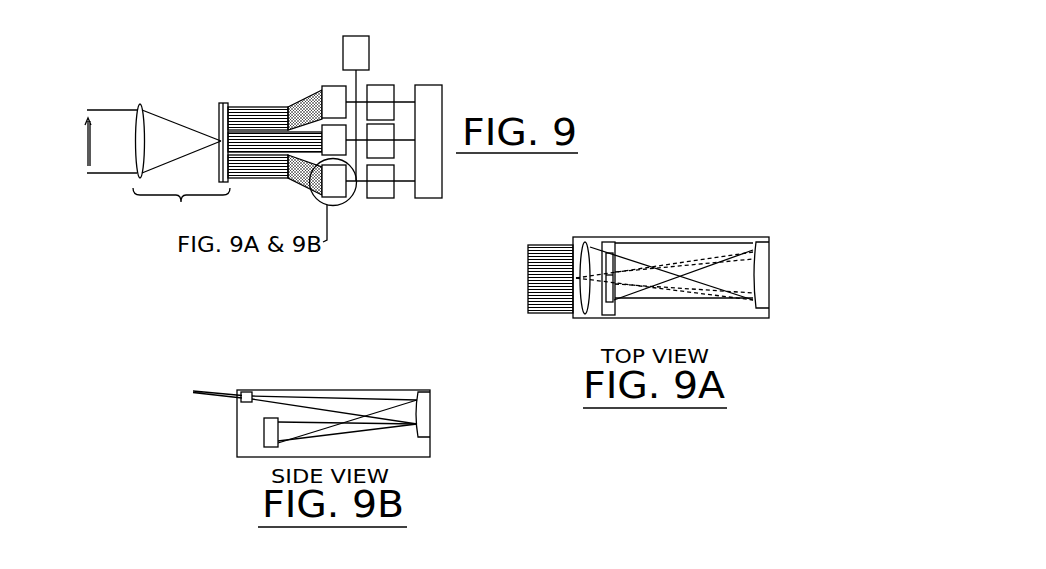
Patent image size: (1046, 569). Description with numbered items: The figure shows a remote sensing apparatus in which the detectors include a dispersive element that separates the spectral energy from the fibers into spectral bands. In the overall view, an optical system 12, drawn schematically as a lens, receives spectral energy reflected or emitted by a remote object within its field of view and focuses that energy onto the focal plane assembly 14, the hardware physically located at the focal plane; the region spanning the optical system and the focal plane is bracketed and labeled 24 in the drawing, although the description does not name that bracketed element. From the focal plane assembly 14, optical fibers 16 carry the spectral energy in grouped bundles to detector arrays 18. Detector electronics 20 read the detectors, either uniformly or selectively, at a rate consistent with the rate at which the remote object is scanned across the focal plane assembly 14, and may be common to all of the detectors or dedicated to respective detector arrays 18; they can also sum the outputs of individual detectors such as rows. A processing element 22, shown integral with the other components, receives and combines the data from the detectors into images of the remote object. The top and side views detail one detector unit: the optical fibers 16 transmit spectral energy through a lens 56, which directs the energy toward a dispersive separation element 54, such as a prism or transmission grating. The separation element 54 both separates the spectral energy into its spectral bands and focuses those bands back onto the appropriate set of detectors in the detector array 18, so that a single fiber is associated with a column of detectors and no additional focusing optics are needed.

In FIG. 9, the optical system 12 is at (136, 180).
In FIG. 9, the focal plane assembly 14 is at (227, 103).
In FIG. 9, the optical fibers 16 is at (270, 107).
In FIG. 9A, the optical fibers 16 is at (528, 277).
In FIG. 9B, the optical fibers 16 is at (206, 389).
In FIG. 9, the detector arrays 18 is at (335, 85).
In FIG. 9A, the detector arrays 18 is at (614, 307).
In FIG. 9B, the detector arrays 18 is at (264, 430).
In FIG. 9, the detector electronics 20 is at (367, 30).
In FIG. 9, the processing element 22 is at (428, 85).
In FIG. 9, the input optics section 24 is at (181, 208).
In FIG. 9A, the separation element 54 is at (762, 243).
In FIG. 9B, the separation element 54 is at (416, 392).
In FIG. 9A, the lens 56 is at (583, 253).
In FIG. 9B, the lens 56 is at (245, 403).